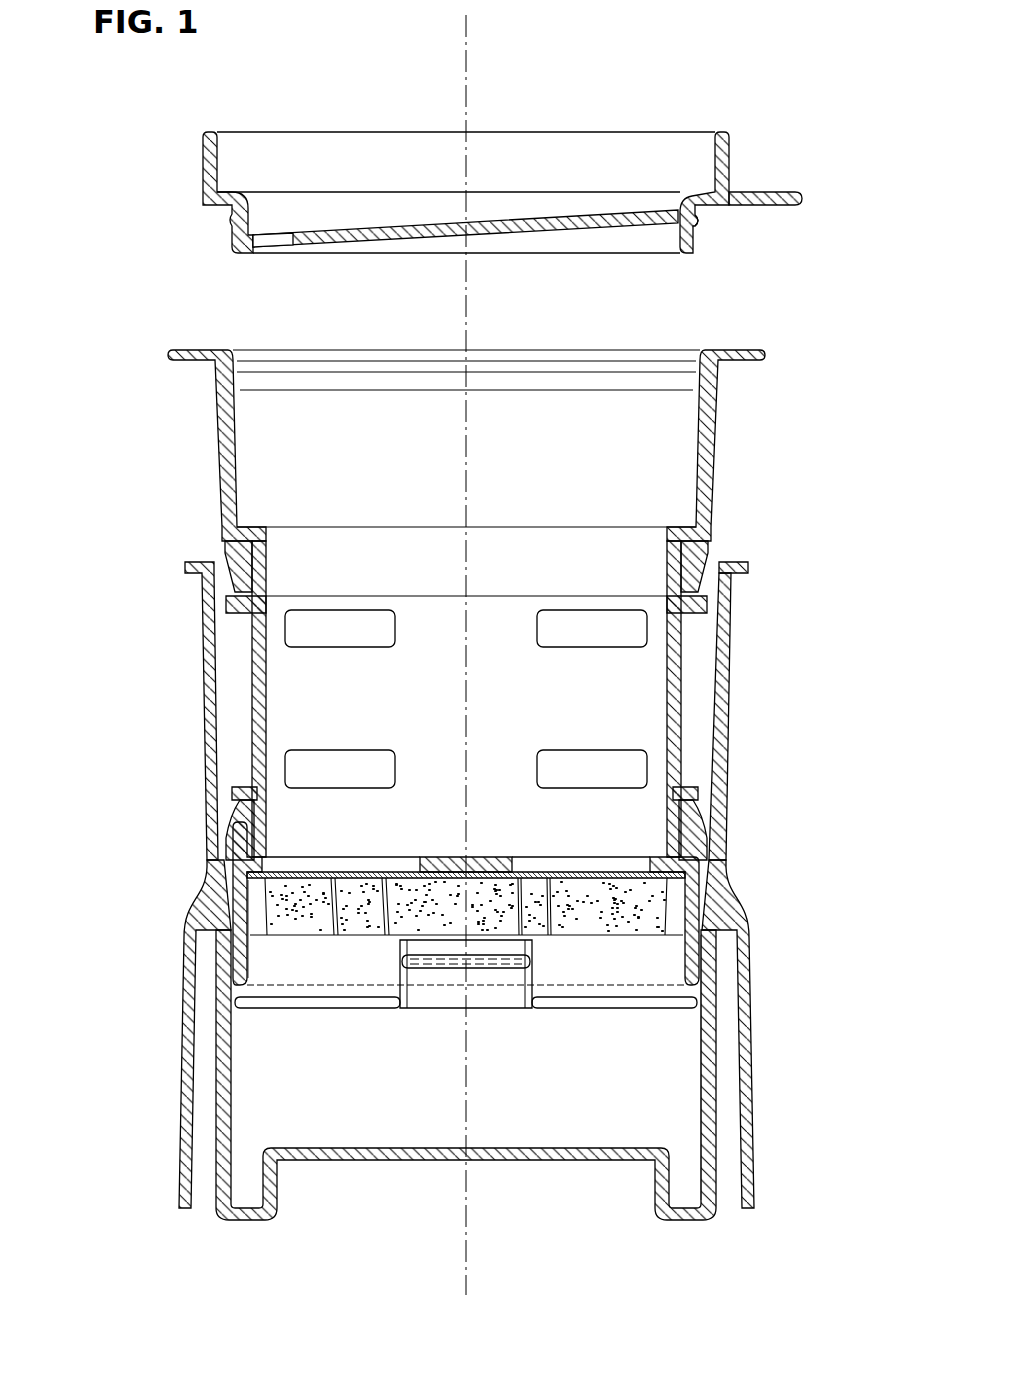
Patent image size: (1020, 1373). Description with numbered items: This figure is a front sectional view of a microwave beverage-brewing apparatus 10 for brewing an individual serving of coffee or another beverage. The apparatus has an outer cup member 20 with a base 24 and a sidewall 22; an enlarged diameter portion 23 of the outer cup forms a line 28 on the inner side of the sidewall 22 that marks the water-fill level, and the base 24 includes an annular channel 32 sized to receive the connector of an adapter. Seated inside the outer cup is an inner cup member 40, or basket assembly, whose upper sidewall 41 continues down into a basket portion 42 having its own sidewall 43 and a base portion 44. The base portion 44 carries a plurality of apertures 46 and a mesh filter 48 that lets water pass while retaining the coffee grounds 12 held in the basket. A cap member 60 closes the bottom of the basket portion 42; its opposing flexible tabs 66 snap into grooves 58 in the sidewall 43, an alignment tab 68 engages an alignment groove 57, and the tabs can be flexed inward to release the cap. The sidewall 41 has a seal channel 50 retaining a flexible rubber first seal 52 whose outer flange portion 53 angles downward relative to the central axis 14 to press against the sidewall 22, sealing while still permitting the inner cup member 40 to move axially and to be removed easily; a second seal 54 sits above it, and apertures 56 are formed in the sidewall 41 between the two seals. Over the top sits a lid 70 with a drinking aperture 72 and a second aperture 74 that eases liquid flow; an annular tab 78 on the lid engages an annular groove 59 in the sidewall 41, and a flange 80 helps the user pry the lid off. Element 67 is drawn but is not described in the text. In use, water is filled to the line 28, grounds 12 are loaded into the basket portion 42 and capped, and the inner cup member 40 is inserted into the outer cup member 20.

The microwave beverage-brewing apparatus 10 is at (169, 415).
The coffee grounds 12 is at (282, 898).
The central axis 14 is at (470, 102).
The outer cup member 20 is at (465, 1079).
The sidewall 22 is at (464, 688).
The enlarged diameter portion 23 is at (205, 651).
The base 24 is at (440, 1160).
The line 28 is at (229, 797).
The annular channel 32 is at (207, 1206).
The inner cup member 40 is at (507, 567).
The sidewall 41 is at (680, 703).
The basket portion 42 is at (474, 934).
The sidewall 43 is at (701, 911).
The base portion 44 is at (483, 862).
The apertures 46 is at (385, 858).
The filter 48 is at (306, 858).
The seal channel 50 is at (680, 568).
The first seal 52 is at (689, 807).
The outer flange portion 53 is at (702, 836).
The second seal 54 is at (709, 553).
The apertures 56 is at (352, 765).
The alignment groove 57 is at (245, 953).
The grooves 58 is at (528, 963).
The annular groove 59 is at (234, 372).
The cap member 60 is at (276, 1007).
The tabs 66 is at (480, 975).
The filter divider 67 is at (554, 895).
The alignment tab 68 is at (247, 963).
The lid 70 is at (465, 217).
The aperture 72 is at (276, 246).
The second aperture 74 is at (659, 224).
The annular tab 78 is at (701, 221).
The flange 80 is at (776, 186).